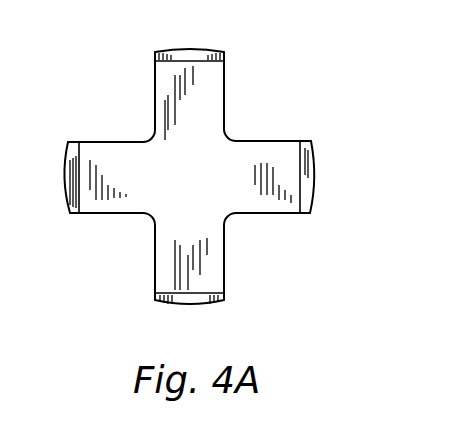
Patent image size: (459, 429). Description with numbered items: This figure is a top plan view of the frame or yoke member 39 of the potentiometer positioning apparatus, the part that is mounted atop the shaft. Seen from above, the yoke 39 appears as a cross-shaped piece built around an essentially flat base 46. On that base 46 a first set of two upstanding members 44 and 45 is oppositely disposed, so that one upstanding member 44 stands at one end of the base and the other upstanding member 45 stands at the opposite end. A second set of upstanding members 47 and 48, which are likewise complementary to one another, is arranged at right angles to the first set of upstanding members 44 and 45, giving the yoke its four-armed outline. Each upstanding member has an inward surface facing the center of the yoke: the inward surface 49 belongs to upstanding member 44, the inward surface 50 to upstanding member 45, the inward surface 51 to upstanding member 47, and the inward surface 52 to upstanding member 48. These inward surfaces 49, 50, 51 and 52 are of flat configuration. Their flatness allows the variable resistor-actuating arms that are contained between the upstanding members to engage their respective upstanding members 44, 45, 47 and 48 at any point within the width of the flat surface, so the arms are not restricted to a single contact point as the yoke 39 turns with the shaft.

The frame or yoke member 39 is at (187, 162).
The upstanding member 44 is at (68, 143).
The upstanding member 45 is at (311, 146).
The flat base 46 is at (108, 143).
The upstanding member 47 is at (216, 303).
The upstanding member 48 is at (199, 50).
The inward surface 49 is at (80, 170).
The inward surface 50 is at (299, 148).
The inward surface 51 is at (208, 291).
The inward surface 52 is at (208, 62).